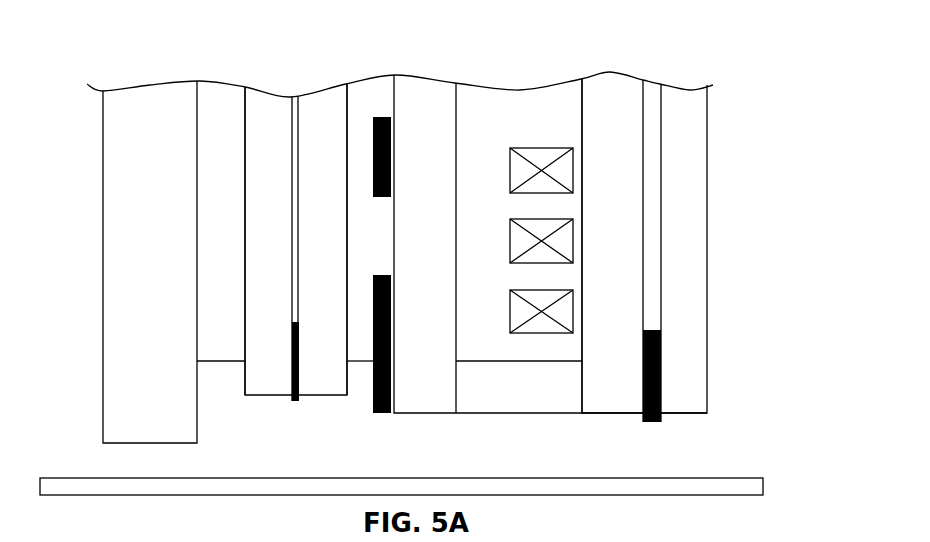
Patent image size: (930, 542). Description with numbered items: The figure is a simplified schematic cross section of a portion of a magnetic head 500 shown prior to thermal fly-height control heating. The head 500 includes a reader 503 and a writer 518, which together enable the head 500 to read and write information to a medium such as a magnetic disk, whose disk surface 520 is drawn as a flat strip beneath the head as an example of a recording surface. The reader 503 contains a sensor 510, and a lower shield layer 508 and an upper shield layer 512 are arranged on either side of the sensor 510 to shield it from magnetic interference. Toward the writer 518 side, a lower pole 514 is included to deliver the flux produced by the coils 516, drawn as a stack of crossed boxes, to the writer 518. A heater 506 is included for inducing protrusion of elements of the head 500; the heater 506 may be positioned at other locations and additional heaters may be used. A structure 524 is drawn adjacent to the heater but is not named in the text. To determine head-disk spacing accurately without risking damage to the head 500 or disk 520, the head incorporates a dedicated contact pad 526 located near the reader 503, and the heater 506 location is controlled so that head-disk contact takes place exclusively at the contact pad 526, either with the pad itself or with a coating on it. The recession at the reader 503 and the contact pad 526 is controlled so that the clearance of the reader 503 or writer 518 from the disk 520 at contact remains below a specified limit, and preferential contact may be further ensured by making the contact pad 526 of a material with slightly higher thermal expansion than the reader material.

The head 500 is at (96, 31).
The reader 503 is at (298, 58).
The heater 506 is at (378, 117).
The lower shield layer 508 is at (286, 285).
The sensor 510 is at (291, 380).
The upper shield layer 512 is at (339, 285).
The lower pole 514 is at (444, 255).
The coils 516 is at (508, 313).
The writer 518 is at (572, 60).
The disk surface 520 is at (713, 475).
The conductive line 524 is at (388, 234).
The contact pad 526 is at (385, 415).